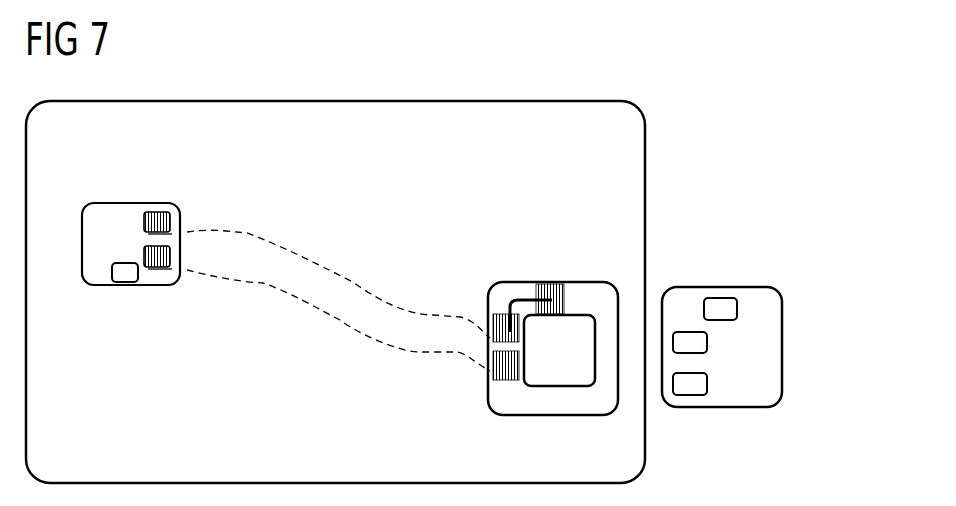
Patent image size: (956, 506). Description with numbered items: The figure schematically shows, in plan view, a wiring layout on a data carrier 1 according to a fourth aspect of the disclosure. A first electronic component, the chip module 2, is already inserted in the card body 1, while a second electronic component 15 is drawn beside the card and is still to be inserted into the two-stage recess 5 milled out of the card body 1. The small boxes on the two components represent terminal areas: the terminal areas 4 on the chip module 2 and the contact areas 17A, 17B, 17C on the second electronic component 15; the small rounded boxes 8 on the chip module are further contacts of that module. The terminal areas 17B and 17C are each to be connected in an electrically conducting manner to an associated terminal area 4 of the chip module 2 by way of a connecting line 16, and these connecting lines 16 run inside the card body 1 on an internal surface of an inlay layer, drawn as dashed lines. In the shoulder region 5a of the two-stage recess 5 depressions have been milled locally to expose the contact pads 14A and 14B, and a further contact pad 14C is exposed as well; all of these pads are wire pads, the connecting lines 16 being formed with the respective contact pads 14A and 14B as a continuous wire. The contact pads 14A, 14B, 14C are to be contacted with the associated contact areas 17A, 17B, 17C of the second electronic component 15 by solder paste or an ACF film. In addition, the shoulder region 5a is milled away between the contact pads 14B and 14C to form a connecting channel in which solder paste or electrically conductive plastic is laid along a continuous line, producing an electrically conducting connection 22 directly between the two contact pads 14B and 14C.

The data carrier 1 is at (632, 148).
The chip module 2 is at (117, 213).
The terminal area 4 is at (159, 212).
The contacts 8 is at (172, 212).
The connecting line 16 is at (287, 244).
The two-stage recess 5 is at (543, 372).
The shoulder region 5a is at (590, 403).
The contact pad 14A is at (488, 371).
The contact pad 14B is at (486, 338).
The further contact pad 14C is at (547, 284).
The electrically conducting connection 22 is at (512, 322).
The second electronic component 15 is at (745, 393).
The contact area 17A is at (690, 388).
The terminal area 17B is at (690, 340).
The terminal area 17C is at (722, 308).